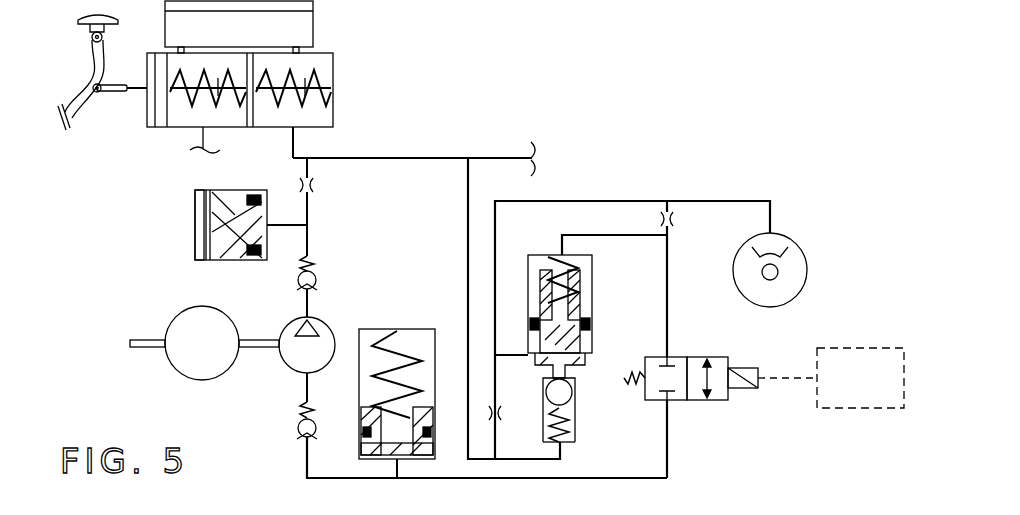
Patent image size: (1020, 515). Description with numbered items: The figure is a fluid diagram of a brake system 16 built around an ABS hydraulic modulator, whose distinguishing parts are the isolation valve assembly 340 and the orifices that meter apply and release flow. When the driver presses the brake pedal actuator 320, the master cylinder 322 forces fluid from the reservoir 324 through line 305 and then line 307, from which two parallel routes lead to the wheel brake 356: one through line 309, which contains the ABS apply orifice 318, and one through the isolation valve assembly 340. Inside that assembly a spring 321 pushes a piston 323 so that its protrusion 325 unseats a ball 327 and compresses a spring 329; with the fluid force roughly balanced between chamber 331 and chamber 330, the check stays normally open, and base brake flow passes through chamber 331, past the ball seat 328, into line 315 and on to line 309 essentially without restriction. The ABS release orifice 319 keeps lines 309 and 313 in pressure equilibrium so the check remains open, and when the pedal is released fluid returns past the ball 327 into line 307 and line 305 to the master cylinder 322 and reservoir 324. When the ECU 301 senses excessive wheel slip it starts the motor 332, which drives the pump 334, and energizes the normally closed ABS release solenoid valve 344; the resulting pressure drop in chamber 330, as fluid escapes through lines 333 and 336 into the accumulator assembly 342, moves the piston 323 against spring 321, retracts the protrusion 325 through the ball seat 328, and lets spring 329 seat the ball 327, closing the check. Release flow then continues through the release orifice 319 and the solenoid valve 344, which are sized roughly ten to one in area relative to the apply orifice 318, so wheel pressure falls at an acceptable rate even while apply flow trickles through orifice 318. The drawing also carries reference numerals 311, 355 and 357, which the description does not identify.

The system 16 is at (668, 148).
The ECU 301 is at (850, 348).
The line 305 is at (380, 157).
The line 307 is at (468, 198).
The line 309 is at (570, 200).
The housing passage 311 is at (605, 235).
The line 313 is at (668, 268).
The line 315 is at (503, 350).
The ABS apply orifice 318 is at (505, 415).
The ABS release orifice 319 is at (676, 218).
The brake pedal actuator 320 is at (66, 130).
The spring 321 is at (556, 285).
The master cylinder 322 is at (343, 77).
The piston 323 is at (600, 296).
The reservoir 324 is at (300, 28).
The protrusion 325 is at (556, 380).
The ball 327 is at (567, 390).
The ball seat 328 is at (540, 385).
The spring 329 is at (577, 440).
The chamber 330 is at (592, 262).
The chamber 331 is at (575, 415).
The motor 332 is at (190, 310).
The line 333 is at (645, 478).
The pump 334 is at (295, 360).
The line 336 is at (400, 470).
The isolation valve assembly 340 is at (575, 452).
The accumulator assembly 342 is at (375, 328).
The ABS release solenoid valve 344 is at (710, 400).
The brake line to wheel brake 355 is at (265, 514).
The wheel brake 356 is at (775, 248).
The brake line to wheel brake 357 is at (222, 514).